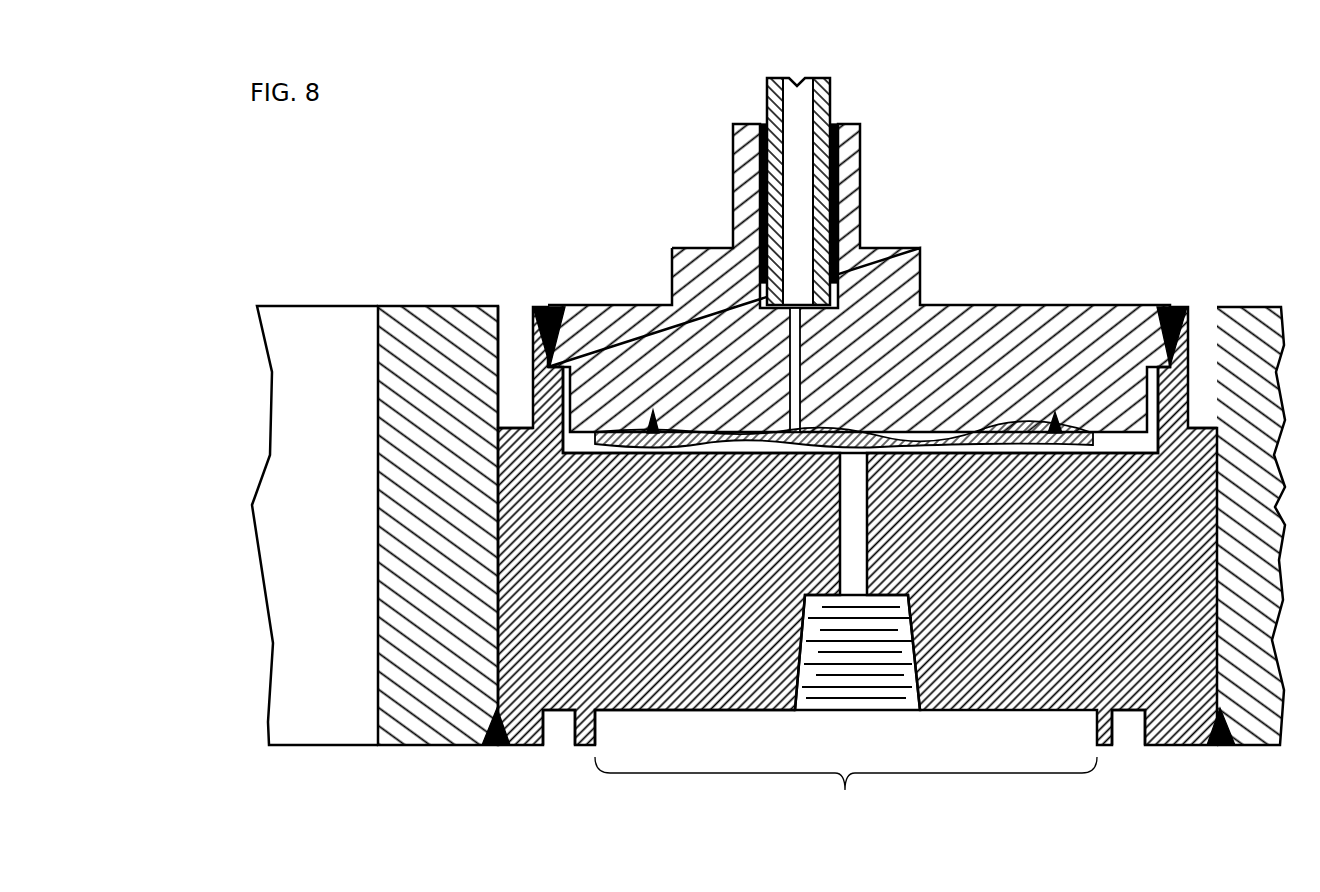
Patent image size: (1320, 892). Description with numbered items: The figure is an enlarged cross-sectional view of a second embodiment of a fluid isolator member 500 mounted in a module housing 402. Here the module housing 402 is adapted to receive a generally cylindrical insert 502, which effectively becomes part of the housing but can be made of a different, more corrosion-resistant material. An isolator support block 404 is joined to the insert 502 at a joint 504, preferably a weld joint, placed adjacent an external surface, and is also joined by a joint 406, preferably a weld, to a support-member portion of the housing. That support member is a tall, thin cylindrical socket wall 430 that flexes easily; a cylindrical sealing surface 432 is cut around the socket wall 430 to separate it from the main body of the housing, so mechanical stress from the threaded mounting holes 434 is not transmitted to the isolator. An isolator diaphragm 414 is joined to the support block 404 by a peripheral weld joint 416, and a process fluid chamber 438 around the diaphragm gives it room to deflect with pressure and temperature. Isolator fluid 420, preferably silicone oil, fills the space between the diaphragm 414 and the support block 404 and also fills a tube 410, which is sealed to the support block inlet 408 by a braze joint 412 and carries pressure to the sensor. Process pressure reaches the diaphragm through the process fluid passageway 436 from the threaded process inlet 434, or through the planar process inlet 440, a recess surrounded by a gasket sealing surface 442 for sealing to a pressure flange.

The fluid isolator member 500 is at (492, 174).
The tube 410 is at (833, 102).
The braze joint 412 is at (840, 139).
The support block inlet 408 is at (848, 185).
The isolator fluid 420 is at (800, 232).
The joint 406 is at (548, 304).
The cylindrical sealing surface 432 is at (503, 300).
The cylindrical socket wall 430 is at (511, 370).
The peripheral weld joint 416 is at (1055, 425).
The isolator support block 404 is at (594, 392).
The threaded process inlet 434 is at (311, 500).
The module housing 402 is at (420, 500).
The cylindrical insert 502 is at (573, 497).
The isolator diaphragm 414 is at (893, 445).
The process fluid chamber 438 is at (1113, 445).
The joint 504 is at (490, 745).
The gasket sealing surface 442 is at (558, 730).
The process fluid passageway 436 is at (700, 713).
The planar process inlet 440 is at (848, 794).